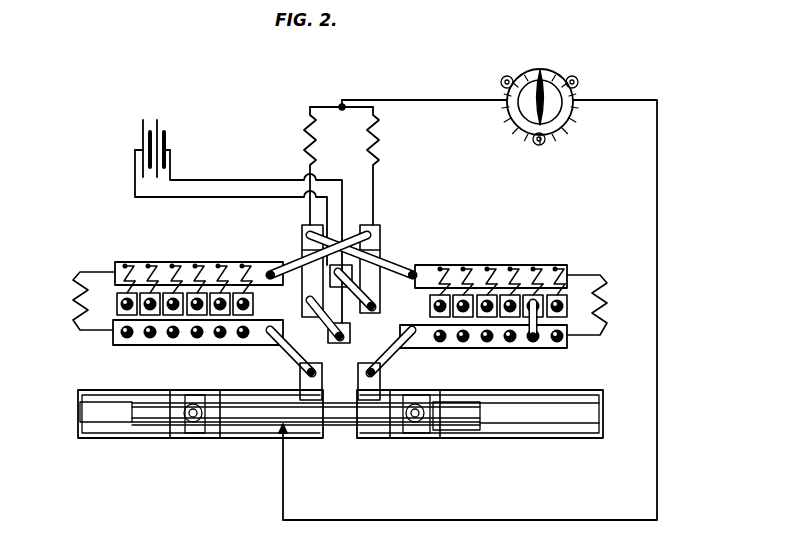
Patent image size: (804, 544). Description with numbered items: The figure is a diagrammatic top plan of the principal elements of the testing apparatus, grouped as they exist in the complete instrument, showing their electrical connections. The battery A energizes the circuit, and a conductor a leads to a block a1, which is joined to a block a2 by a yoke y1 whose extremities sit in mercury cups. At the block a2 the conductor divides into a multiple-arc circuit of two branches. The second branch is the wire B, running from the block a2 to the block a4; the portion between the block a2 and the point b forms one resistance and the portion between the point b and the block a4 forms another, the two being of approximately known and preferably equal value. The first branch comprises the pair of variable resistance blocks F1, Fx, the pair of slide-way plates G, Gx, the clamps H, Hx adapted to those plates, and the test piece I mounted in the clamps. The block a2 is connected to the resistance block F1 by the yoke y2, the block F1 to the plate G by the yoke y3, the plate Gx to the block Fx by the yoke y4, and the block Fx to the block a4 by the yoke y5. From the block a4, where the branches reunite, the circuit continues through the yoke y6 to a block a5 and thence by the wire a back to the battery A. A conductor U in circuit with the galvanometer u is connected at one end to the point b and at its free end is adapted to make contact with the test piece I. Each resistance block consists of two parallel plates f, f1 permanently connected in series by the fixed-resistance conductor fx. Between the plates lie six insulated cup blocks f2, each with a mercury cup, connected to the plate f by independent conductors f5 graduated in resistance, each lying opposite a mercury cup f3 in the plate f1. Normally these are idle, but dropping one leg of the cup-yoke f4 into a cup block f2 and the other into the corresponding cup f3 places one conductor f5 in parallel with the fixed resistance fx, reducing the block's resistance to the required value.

The battery A is at (169, 148).
The conductor a is at (262, 205).
The block a1 is at (256, 185).
The block a2 is at (302, 233).
The block a4 is at (380, 232).
The block a5 is at (330, 277).
The wire B is at (341, 166).
The point b is at (332, 97).
The galvanometer u is at (540, 70).
The conductor U is at (470, 532).
The variable resistance block Fx is at (161, 258).
The variable resistance block F1 is at (519, 263).
The plate f is at (148, 264).
The plate f1 is at (131, 346).
The cup blocks f2 is at (117, 304).
The mercury cups f3 is at (228, 348).
The cup-yoke f4 is at (531, 350).
The conductors f5 is at (124, 265).
The conductor fx is at (335, 303).
The yoke y1 is at (326, 322).
The yoke y2 is at (386, 262).
The yoke y3 is at (398, 352).
The yoke y4 is at (287, 352).
The yoke y5 is at (294, 264).
The yoke y6 is at (382, 298).
The slide-way plate Gx is at (78, 412).
The slide-way plate G is at (603, 412).
The clamp Hx is at (194, 440).
The clamp H is at (414, 440).
The test piece I is at (293, 421).